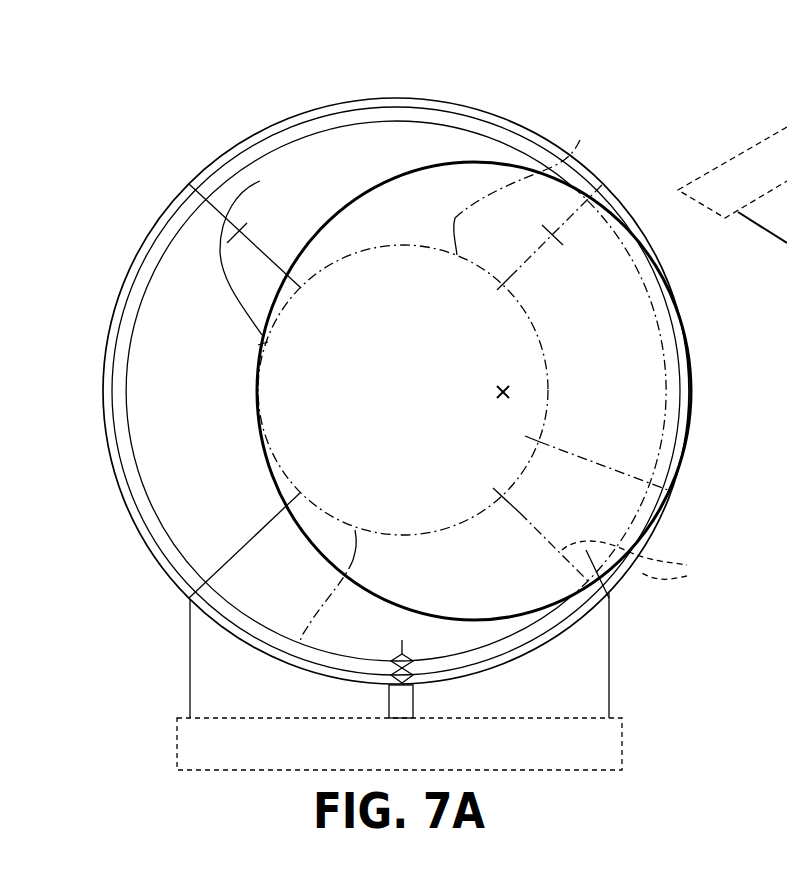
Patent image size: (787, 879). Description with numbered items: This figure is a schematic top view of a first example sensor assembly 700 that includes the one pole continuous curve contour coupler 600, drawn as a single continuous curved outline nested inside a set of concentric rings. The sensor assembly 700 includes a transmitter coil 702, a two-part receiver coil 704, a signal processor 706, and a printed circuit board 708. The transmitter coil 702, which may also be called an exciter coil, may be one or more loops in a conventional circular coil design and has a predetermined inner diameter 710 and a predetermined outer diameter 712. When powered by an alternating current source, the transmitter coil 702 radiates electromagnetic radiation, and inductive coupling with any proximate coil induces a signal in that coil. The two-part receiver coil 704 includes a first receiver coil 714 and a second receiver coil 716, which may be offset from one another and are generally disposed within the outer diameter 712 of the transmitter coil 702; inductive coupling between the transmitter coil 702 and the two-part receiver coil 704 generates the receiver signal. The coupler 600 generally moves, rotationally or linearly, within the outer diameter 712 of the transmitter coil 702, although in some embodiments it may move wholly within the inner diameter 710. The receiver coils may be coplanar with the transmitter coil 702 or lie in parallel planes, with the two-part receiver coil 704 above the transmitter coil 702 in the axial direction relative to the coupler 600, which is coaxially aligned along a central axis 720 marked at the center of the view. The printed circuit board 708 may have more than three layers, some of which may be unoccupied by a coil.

The sensor assembly 700 is at (130, 96).
The one pole continuous curve contour coupler 600 is at (440, 161).
The transmitter coil 702 is at (135, 529).
The two-part receiver coil 704 is at (146, 338).
The signal processor 706 is at (595, 738).
The printed circuit board 708 is at (380, 134).
The inner diameter 710 is at (135, 458).
The outer diameter 712 is at (103, 384).
The first receiver coil 714 is at (258, 250).
The second receiver coil 716 is at (568, 218).
The central axis 720 is at (498, 392).